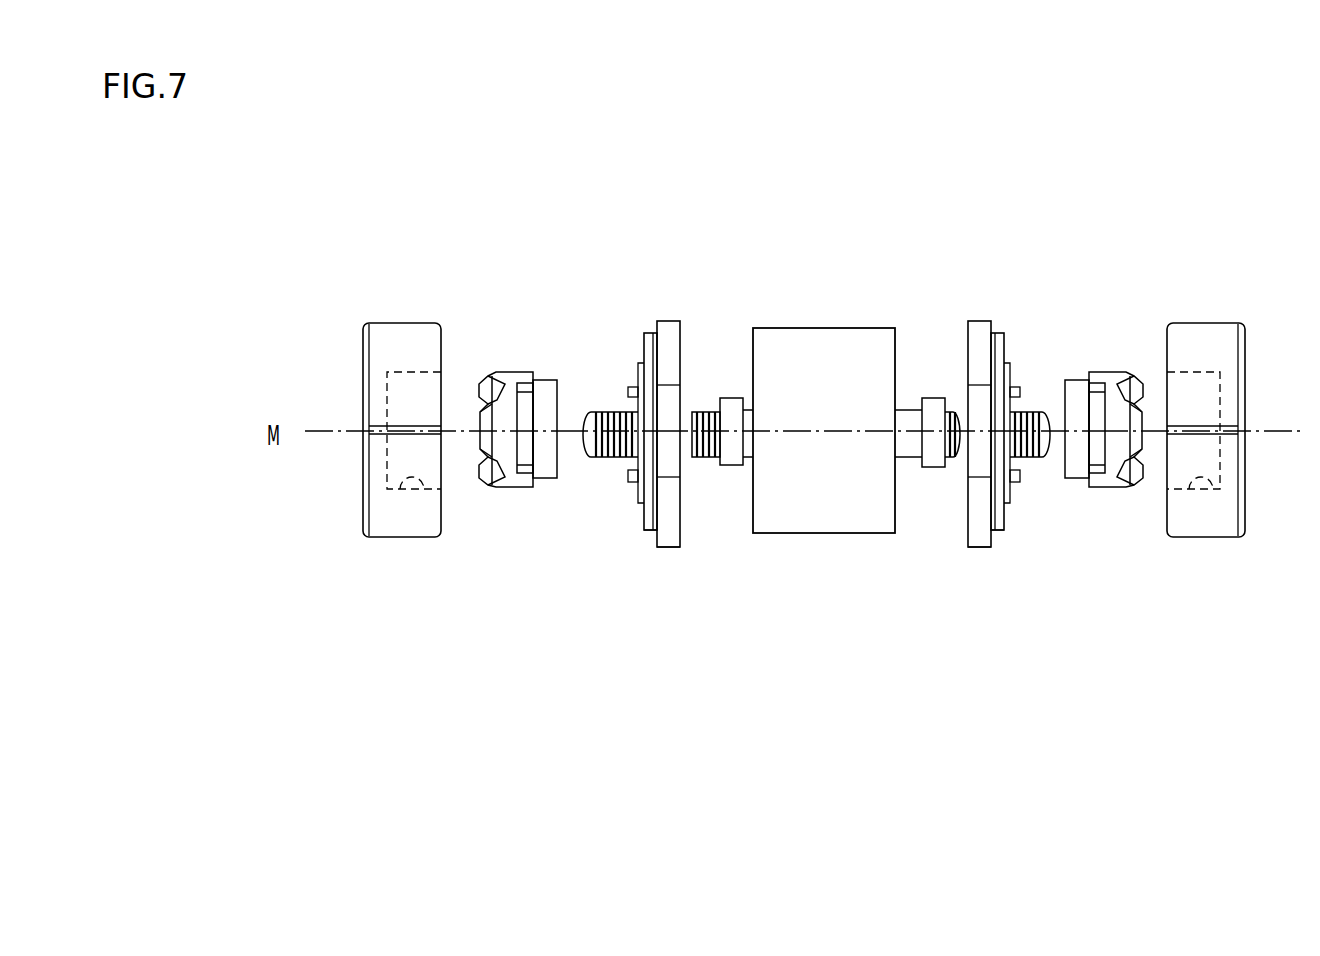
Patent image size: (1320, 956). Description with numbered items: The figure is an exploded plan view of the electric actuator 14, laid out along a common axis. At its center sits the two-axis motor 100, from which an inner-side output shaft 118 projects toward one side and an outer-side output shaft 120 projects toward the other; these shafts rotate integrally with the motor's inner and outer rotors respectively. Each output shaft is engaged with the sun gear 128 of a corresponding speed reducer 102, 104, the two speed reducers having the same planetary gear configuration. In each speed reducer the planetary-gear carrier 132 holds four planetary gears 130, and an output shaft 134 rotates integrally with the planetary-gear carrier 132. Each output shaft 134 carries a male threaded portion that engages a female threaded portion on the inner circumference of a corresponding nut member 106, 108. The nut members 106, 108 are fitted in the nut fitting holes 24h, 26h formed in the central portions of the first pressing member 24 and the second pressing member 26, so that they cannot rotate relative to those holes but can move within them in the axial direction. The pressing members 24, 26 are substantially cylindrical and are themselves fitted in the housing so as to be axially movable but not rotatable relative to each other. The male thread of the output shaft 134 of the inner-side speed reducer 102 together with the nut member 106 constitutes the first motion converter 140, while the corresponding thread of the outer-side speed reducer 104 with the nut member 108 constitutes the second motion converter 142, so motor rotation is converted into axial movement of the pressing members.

The electric actuator 14 is at (848, 587).
The first pressing member 24 is at (383, 330).
The nut fitting hole 24h is at (424, 489).
The second pressing member 26 is at (1198, 333).
The nut fitting hole 26h is at (1210, 489).
The two-axis motor 100 is at (808, 303).
The speed reducer 102 is at (647, 305).
The speed reducer 104 is at (987, 293).
The nut member 106 is at (517, 370).
The nut member 108 is at (1108, 378).
The inner-side output shaft 118 is at (732, 465).
The outer-side output shaft 120 is at (932, 467).
The sun gear 128 is at (705, 410).
The planetary gears 130 is at (673, 547).
The planetary-gear carrier 132 is at (650, 528).
The output shaft 134 is at (605, 458).
The first motion converter 140 is at (604, 382).
The second motion converter 142 is at (1045, 390).